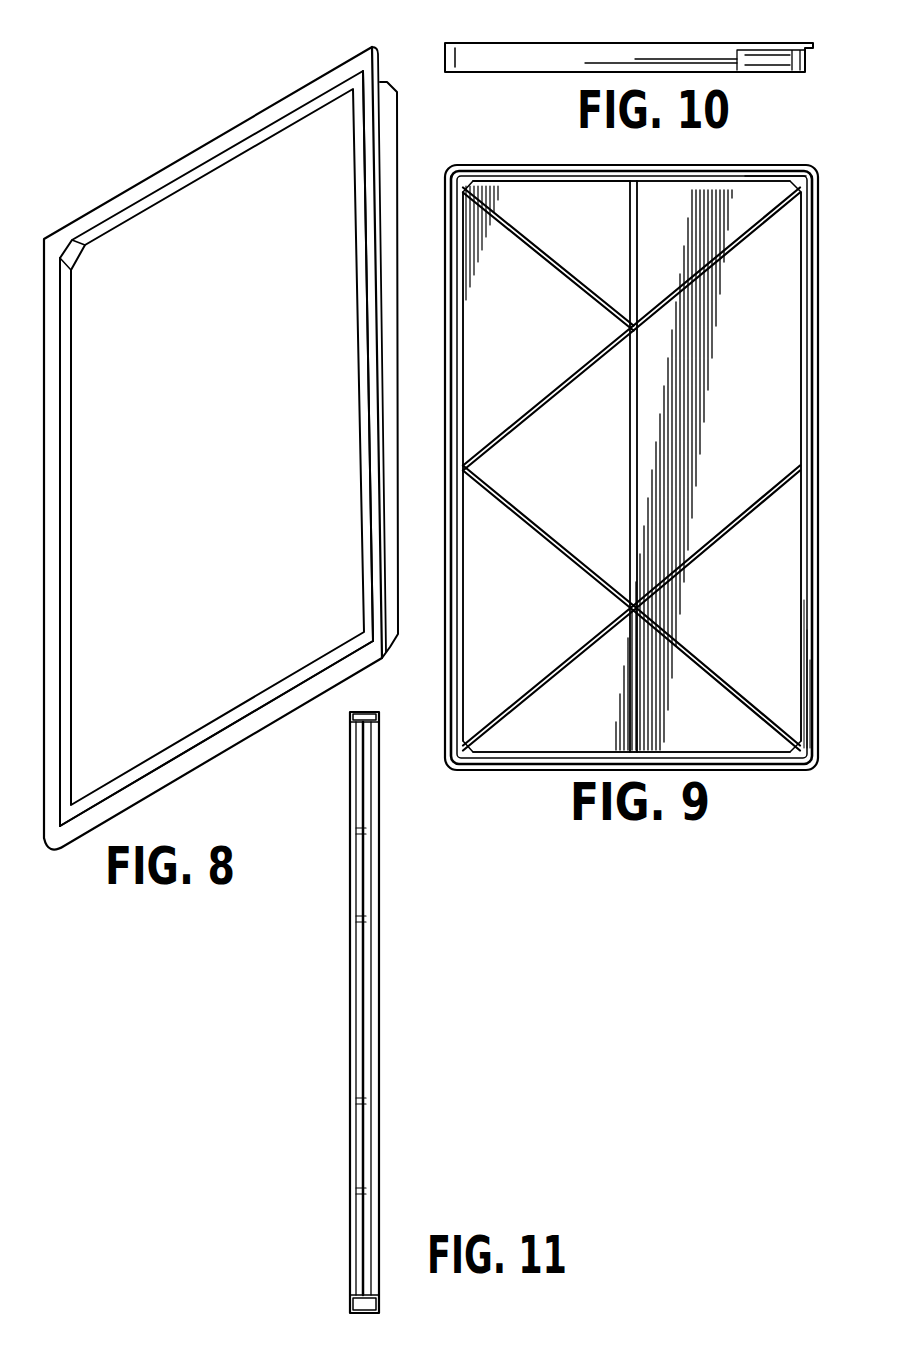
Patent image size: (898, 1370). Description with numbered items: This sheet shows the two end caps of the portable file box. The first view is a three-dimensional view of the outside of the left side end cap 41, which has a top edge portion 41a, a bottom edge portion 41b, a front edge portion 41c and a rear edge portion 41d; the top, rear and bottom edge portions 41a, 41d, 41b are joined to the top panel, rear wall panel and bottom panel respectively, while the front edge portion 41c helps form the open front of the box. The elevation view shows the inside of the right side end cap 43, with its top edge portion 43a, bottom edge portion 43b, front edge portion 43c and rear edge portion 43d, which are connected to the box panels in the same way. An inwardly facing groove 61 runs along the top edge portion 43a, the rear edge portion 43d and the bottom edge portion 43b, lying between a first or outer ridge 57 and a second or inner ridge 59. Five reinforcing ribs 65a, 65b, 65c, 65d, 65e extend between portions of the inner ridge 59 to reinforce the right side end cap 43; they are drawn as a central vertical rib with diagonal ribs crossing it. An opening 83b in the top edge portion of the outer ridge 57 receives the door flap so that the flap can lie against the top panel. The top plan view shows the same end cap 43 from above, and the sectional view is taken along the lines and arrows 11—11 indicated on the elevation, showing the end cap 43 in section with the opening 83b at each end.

In FIG. 8, the left side end cap 41 is at (170, 262).
In FIG. 8, the top edge portion 41a is at (252, 160).
In FIG. 8, the bottom edge portion 41b is at (211, 700).
In FIG. 8, the front edge portion 41c is at (352, 220).
In FIG. 8, the rear edge portion 41d is at (80, 370).
In FIG. 10, the right side end cap 43 is at (630, 60).
In FIG. 9, the right side end cap 43 is at (760, 279).
In FIG. 11, the right side end cap 43 is at (365, 884).
In FIG. 10, the top edge portion 43a is at (552, 58).
In FIG. 9, the top edge portion 43a is at (653, 198).
In FIG. 9, the bottom edge portion 43b is at (702, 728).
In FIG. 9, the front edge portion 43c is at (772, 516).
In FIG. 9, the rear edge portion 43d is at (478, 410).
In FIG. 9, the first or outer ridge 57 is at (586, 168).
In FIG. 9, the second or inner ridge 59 is at (677, 176).
In FIG. 9, the groove 61 is at (720, 174).
In FIG. 9, the opening 83b is at (756, 173).
In FIG. 11, the opening 83b is at (352, 722).
In FIG. 9, the reinforcing rib 65a is at (566, 382).
In FIG. 9, the reinforcing rib 65b is at (573, 284).
In FIG. 9, the reinforcing rib 65c is at (630, 444).
In FIG. 9, the reinforcing rib 65d is at (563, 552).
In FIG. 9, the reinforcing rib 65e is at (698, 554).
In FIG. 9, the section lines and arrows 11— 11 is at (437, 140).